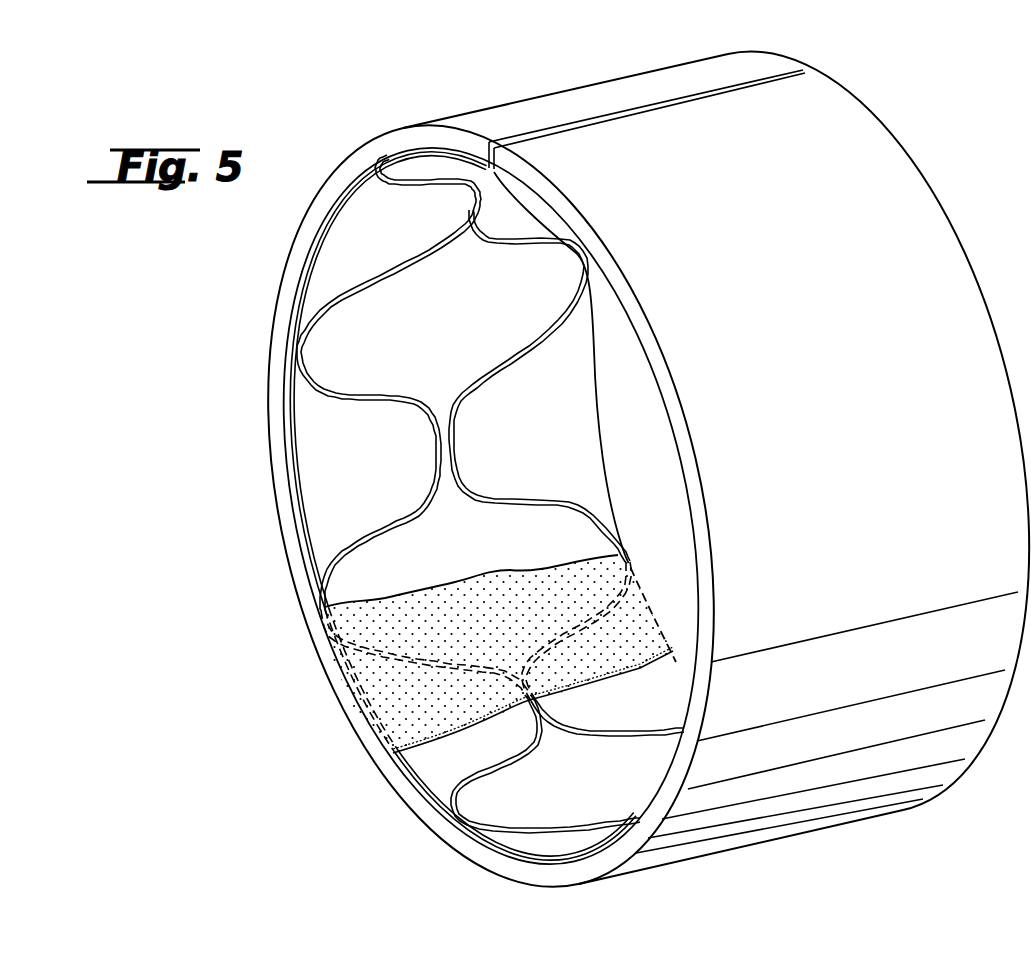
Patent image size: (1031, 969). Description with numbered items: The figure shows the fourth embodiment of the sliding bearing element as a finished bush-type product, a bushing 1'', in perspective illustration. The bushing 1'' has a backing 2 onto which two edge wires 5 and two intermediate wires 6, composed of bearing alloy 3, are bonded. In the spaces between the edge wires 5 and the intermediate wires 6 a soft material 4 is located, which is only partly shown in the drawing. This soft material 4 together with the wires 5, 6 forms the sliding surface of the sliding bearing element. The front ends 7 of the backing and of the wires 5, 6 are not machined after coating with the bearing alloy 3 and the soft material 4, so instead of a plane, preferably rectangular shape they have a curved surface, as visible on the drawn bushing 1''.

The bushing 1'' is at (613, 480).
The backing 2 is at (800, 787).
The bearing alloy 3 is at (398, 498).
The soft material 4 is at (387, 697).
The edge wires 5 is at (305, 570).
The intermediate wires 6 is at (530, 500).
The front ends 7 is at (275, 343).